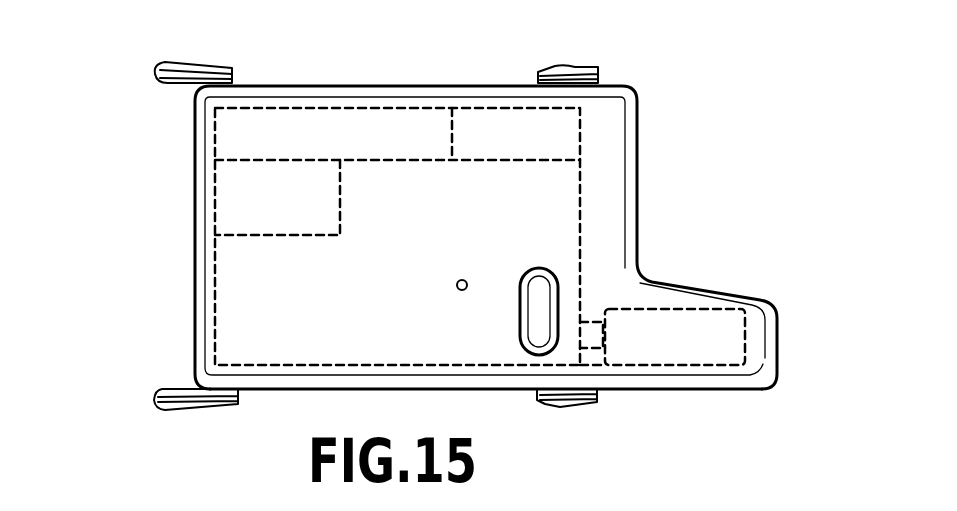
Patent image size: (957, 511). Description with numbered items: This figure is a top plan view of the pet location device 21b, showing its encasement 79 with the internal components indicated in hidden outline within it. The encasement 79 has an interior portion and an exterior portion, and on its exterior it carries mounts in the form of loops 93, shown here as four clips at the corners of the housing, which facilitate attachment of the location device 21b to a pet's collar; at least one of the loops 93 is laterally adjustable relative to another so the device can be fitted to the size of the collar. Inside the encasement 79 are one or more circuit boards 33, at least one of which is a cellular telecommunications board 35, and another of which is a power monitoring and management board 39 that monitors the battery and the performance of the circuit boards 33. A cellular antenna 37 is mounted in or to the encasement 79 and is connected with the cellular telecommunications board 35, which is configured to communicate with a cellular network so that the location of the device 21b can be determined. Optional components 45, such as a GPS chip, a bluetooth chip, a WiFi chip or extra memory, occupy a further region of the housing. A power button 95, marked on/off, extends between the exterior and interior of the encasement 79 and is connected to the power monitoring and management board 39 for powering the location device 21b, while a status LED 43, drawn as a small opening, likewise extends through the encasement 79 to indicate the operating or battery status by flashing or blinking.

The pet location device 21b is at (670, 99).
The circuit boards 33 is at (478, 230).
The cellular telecommunications board 35 is at (376, 202).
The cellular antenna 37 is at (676, 337).
The power monitoring and management board 39 is at (430, 156).
The status LED 43 is at (457, 285).
The optional components 45 is at (292, 215).
The encasement 79 is at (447, 392).
The loops 93 is at (178, 62).
The power button 95 is at (557, 285).